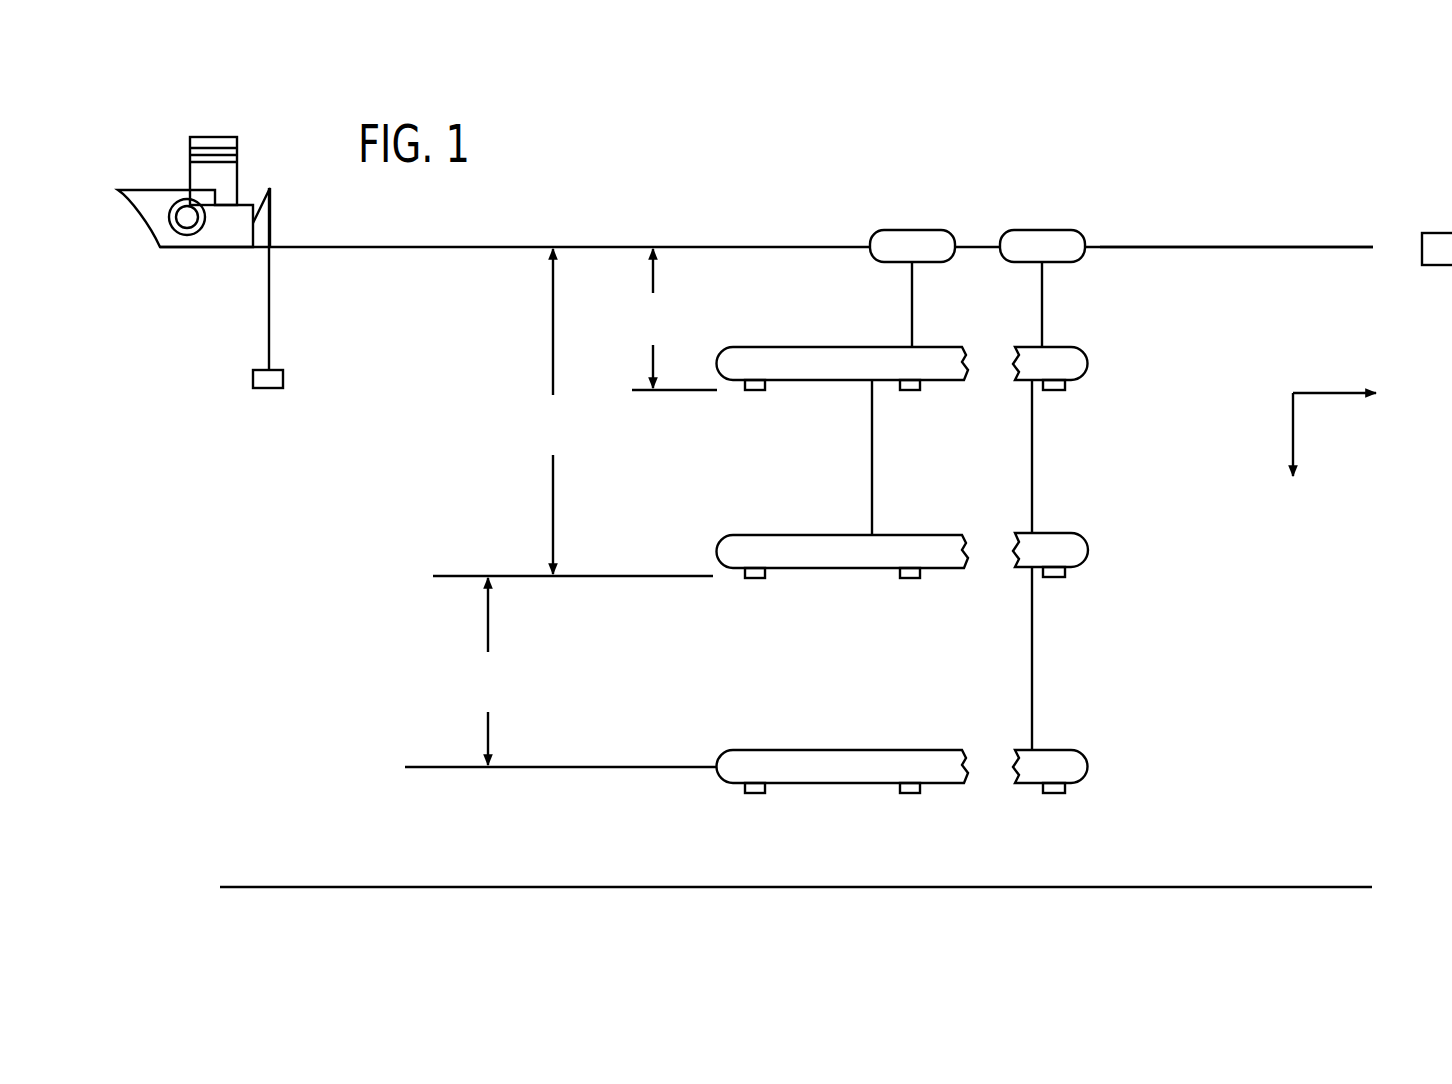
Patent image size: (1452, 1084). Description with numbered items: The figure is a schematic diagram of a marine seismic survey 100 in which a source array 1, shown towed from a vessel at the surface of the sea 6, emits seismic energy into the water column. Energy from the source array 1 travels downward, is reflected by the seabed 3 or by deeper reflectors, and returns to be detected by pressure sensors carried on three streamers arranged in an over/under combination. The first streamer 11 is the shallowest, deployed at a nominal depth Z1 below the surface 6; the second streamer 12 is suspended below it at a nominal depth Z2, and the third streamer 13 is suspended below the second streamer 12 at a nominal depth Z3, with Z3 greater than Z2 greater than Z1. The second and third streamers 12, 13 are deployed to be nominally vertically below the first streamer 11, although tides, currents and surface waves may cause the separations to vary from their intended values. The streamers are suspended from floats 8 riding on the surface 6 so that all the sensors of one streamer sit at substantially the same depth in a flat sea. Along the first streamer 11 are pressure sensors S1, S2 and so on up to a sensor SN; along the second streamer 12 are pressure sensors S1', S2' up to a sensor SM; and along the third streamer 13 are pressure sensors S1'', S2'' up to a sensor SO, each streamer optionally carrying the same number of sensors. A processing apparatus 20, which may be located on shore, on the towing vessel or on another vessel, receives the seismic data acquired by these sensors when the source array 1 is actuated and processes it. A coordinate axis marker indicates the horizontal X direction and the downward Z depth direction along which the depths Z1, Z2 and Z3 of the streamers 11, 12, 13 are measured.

The marine seismic survey 100 is at (644, 150).
The source array 1 is at (283, 380).
The floats 8 is at (910, 228).
The surface of the sea 6 is at (1265, 247).
The processing apparatus 20 is at (1440, 232).
The first streamer 11 is at (1086, 363).
The second streamer 12 is at (1086, 550).
The third streamer 13 is at (1086, 766).
The seabed 3 is at (1250, 887).
The pressure sensor S1 is at (841, 441).
The pressure sensor S2 is at (930, 413).
The pressure sensor S1' is at (837, 580).
The pressure sensor S2' is at (886, 597).
The pressure sensor S1'' is at (833, 796).
The pressure sensor S2'' is at (886, 813).
The pressure sensor SN is at (1055, 390).
The pressure sensor SM is at (1055, 577).
The pressure sensor SO is at (1055, 793).
The nominal depth of first streamer Z1 is at (674, 319).
The nominal depth of second streamer Z2 is at (573, 412).
The nominal depth of third streamer Z3 is at (561, 672).
The X axis X is at (1349, 394).
The Z axis Z is at (1294, 456).